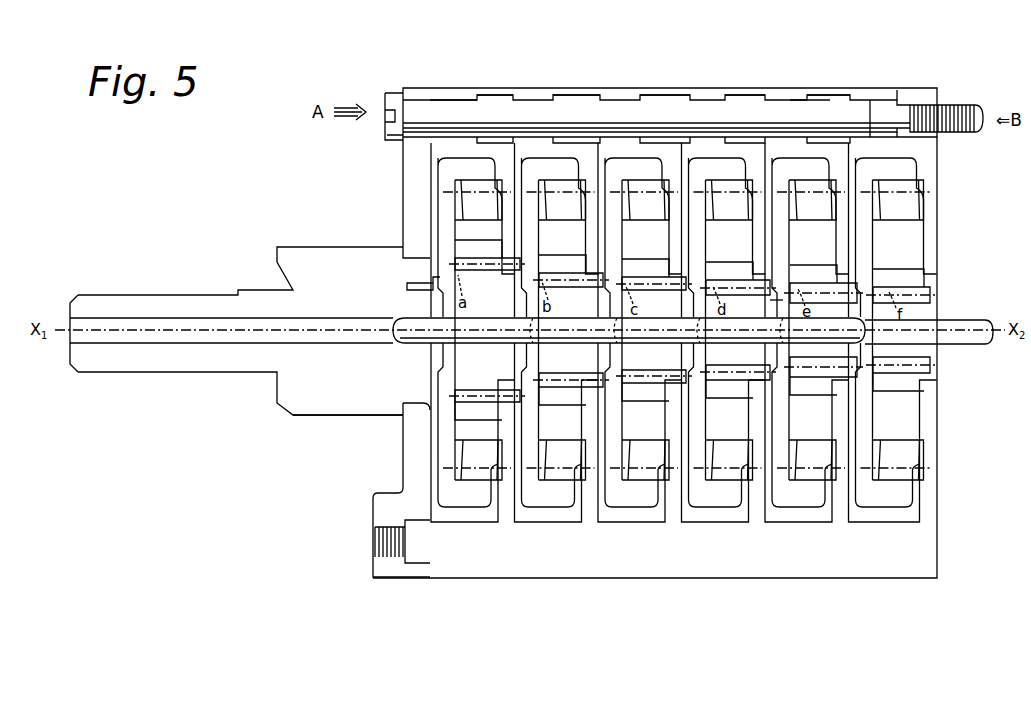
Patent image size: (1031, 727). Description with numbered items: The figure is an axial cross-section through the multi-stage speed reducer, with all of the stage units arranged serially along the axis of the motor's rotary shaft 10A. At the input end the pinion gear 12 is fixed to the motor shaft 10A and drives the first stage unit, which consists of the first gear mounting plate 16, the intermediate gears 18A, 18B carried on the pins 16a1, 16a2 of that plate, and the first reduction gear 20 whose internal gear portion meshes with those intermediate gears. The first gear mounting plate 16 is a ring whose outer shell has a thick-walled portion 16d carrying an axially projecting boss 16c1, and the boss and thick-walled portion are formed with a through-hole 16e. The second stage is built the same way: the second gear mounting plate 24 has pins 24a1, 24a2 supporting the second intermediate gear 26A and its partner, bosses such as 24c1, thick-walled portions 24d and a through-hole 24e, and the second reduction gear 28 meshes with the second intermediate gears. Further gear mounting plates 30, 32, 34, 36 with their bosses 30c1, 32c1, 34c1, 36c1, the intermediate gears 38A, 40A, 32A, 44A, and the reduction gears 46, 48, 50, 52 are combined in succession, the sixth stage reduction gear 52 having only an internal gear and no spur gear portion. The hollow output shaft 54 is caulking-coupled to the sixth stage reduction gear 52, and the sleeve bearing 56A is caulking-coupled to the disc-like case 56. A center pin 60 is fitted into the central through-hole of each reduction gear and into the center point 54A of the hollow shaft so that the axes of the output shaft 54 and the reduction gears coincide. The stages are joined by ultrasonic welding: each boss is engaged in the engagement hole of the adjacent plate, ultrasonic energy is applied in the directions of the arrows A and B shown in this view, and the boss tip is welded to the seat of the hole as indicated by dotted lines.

The rotary shaft of the motor 10A is at (975, 325).
The pinion gear 12 is at (927, 313).
The first gear mounting plate 16 is at (922, 181).
The pin 16a1 is at (900, 262).
The pin 16a2 is at (902, 421).
The boss 16c1 is at (882, 137).
The thick-walled portion 16d is at (907, 95).
The through-hole 16e is at (945, 92).
The intermediate gear 18A is at (915, 279).
The intermediate gear 18B is at (902, 212).
The first reduction gear 20 is at (878, 497).
The second gear mounting plate 24 is at (800, 567).
The pin 24a1 is at (807, 238).
The pin 24a2 is at (800, 420).
The boss 24c1 is at (735, 97).
The thick-walled portion 24d is at (812, 135).
The through-hole 24e is at (803, 133).
The second intermediate gear 26A is at (832, 282).
The second reduction gear 28 is at (782, 165).
The third gear mounting plate 30 is at (725, 567).
The boss 30c1 is at (660, 97).
The fifth gear mounting plate 32 is at (645, 567).
The intermediate gear 32A is at (565, 264).
The boss 32c1 is at (580, 97).
The gear mounting plate 34 is at (553, 567).
The boss 34c1 is at (500, 97).
The sixth gear mounting plate 36 is at (468, 567).
The boss 36c1 is at (463, 92).
The intermediate gear 38A is at (748, 274).
The intermediate gear 40A is at (665, 274).
The intermediate gear 44A is at (488, 256).
The third stage reduction gear 46 is at (689, 313).
The fourth stage reduction gear 48 is at (605, 309).
The fifth stage reduction gear 50 is at (525, 307).
The sixth stage reduction gear 52 is at (477, 499).
The hollow output shaft 54 is at (193, 363).
The center point of the hollow shaft 54A is at (122, 337).
The case 56 is at (413, 465).
The sleeve bearing 56A is at (310, 403).
The center pin 60 is at (438, 112).